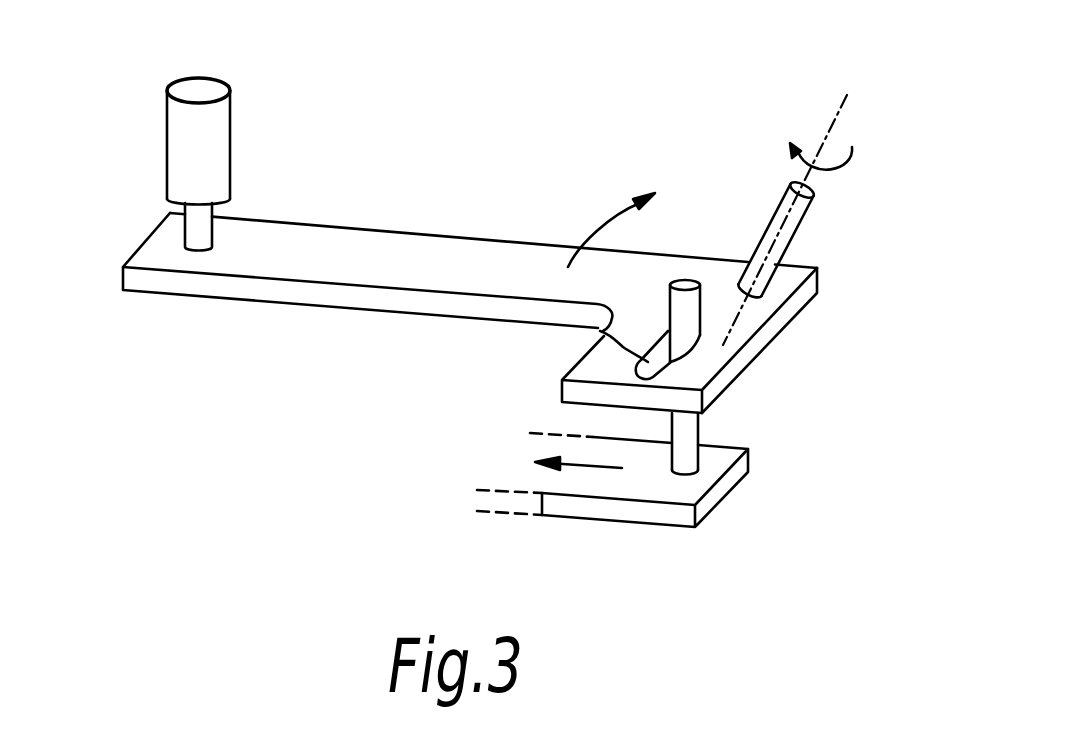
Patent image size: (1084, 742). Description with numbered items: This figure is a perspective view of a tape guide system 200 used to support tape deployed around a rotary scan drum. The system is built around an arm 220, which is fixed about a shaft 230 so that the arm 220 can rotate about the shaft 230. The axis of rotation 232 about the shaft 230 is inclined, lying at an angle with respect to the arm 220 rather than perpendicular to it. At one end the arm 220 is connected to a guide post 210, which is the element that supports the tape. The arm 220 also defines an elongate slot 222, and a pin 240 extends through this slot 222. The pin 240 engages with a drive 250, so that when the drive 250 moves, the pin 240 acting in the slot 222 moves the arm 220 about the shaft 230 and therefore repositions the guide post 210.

The tape guide system 200 is at (508, 177).
The guide post 210 is at (185, 157).
The arm 220 is at (360, 307).
The elongate slot 222 is at (600, 331).
The shaft 230 is at (797, 223).
The axis of rotation 232 is at (833, 126).
The pin 240 is at (690, 307).
The drive 250 is at (642, 487).